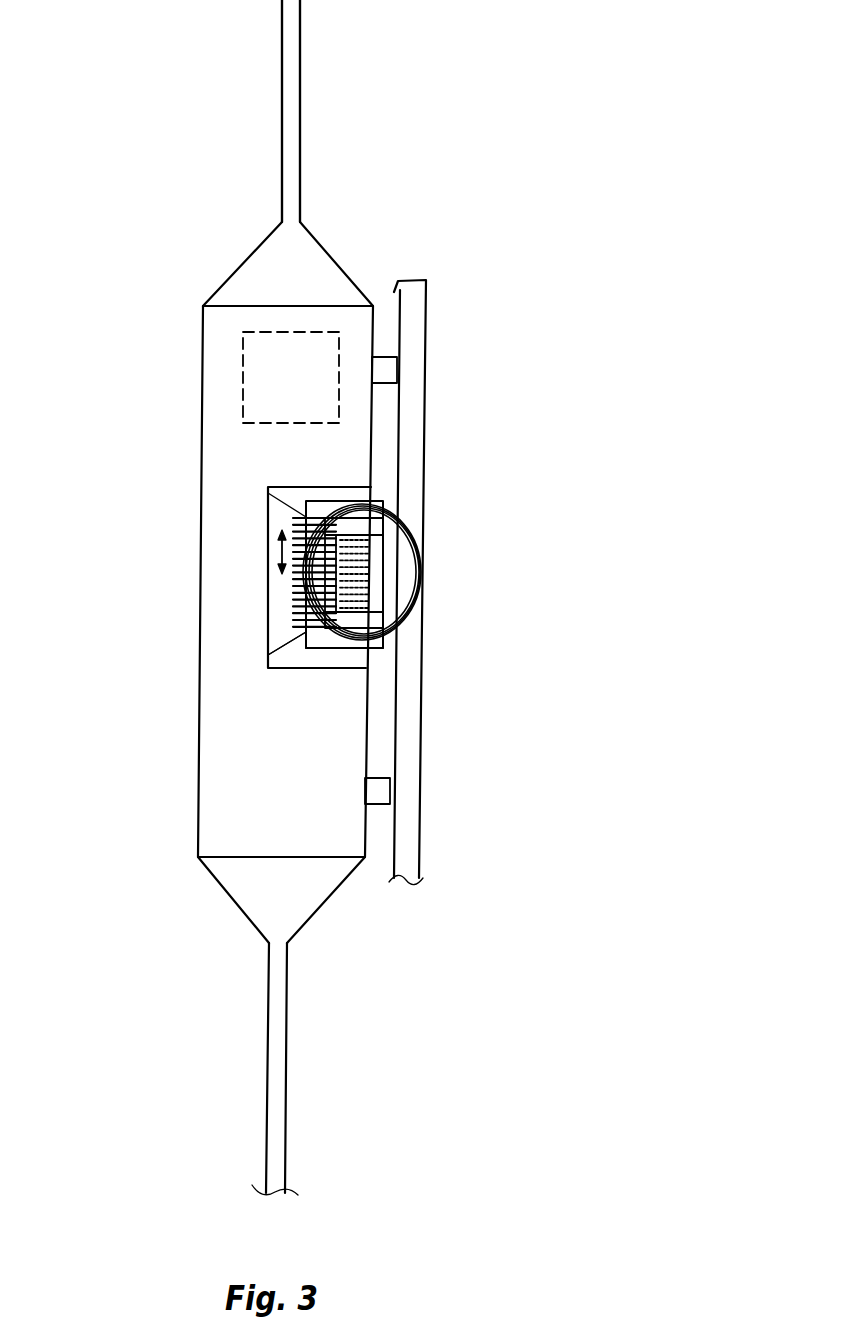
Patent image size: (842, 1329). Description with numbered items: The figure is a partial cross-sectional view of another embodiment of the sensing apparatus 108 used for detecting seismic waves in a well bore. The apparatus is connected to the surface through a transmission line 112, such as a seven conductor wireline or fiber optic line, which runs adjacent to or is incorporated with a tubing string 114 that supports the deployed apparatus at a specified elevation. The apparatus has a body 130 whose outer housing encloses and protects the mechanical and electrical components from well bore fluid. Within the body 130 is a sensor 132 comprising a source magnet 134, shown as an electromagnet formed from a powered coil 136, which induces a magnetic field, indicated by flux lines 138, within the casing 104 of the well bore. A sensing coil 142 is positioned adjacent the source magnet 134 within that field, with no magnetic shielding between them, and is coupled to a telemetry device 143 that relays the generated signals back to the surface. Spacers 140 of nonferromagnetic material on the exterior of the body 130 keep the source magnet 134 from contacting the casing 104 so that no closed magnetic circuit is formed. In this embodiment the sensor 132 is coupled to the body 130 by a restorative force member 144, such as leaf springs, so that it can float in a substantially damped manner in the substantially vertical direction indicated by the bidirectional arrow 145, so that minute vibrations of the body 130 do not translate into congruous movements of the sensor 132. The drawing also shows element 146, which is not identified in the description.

The casing 104 is at (427, 300).
The sensing apparatus 108 is at (218, 582).
The transmission line 112 is at (302, 117).
The tubing string 114 is at (291, 111).
The body 130 is at (201, 447).
The sensor 132 is at (388, 454).
The source magnet 134 is at (383, 650).
The powered coil 136 is at (290, 585).
The flux lines 138 is at (392, 505).
The spacers 140 is at (389, 356).
The sensing coil 142 is at (372, 568).
The telemetry device 143 is at (300, 350).
The restorative force member 144 is at (290, 638).
The bidirectional arrow 145 is at (268, 551).
The cables / wires 146 is at (395, 618).